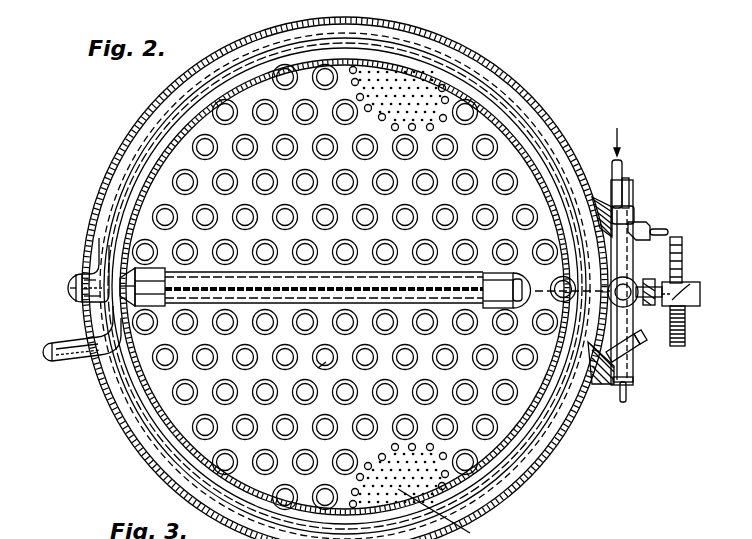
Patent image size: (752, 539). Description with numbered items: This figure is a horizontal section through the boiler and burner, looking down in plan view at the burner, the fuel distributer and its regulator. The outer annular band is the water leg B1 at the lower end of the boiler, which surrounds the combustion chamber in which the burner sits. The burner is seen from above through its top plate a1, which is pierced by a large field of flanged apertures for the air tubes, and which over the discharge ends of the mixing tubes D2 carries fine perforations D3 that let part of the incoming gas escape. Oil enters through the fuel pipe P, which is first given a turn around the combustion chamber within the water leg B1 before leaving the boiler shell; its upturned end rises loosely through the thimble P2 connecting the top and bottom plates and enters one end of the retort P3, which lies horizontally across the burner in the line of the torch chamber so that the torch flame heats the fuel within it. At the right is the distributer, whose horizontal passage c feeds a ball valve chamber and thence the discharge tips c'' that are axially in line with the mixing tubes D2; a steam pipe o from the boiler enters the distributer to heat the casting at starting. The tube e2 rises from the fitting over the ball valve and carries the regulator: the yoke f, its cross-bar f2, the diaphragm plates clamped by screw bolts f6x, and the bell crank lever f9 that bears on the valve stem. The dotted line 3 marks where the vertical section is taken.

The water leg B1 is at (148, 418).
The fine perforations D3 is at (434, 84).
The top plate a1 is at (468, 208).
The horizontal passage c is at (314, 372).
The fuel pipe P is at (74, 366).
The thimble P2 is at (152, 274).
The retort P3 is at (355, 277).
The section line 3- 3 is at (36, 282).
The mixing tube D2 is at (606, 196).
The steam pipe o is at (612, 182).
The discharge tip c'' is at (637, 304).
The yoke f is at (699, 289).
The cross-bar f2 is at (692, 283).
The screw bolts f6x is at (686, 250).
The bell crank lever f9 is at (640, 307).
The tube e2 is at (650, 279).